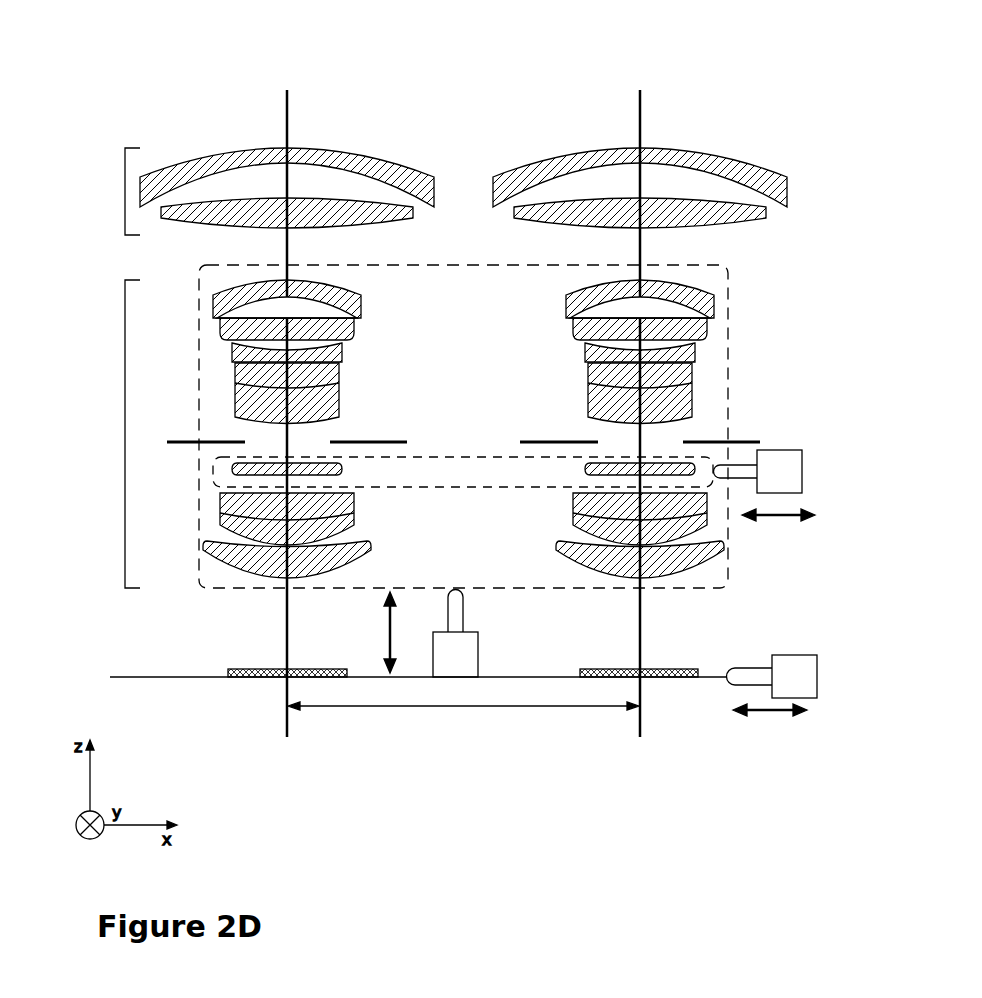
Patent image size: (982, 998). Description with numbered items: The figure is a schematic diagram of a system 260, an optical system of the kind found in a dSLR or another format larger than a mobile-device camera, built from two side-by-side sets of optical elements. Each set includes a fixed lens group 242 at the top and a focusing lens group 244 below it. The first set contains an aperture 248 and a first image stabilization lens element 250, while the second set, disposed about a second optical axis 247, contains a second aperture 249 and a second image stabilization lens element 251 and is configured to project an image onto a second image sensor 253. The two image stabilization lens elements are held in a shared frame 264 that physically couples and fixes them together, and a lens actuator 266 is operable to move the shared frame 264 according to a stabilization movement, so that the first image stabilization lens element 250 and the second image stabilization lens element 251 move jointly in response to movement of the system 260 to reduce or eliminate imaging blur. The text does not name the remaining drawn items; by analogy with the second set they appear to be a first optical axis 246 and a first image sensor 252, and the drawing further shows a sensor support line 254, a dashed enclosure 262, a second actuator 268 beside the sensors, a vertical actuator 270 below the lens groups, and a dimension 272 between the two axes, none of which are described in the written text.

The system 260 is at (426, 46).
The fixed lens group 242 is at (125, 192).
The focusing lens group 244 is at (125, 445).
The first optical axis 246 is at (288, 118).
The second optical axis 247 is at (641, 118).
The aperture 248 is at (185, 441).
The second aperture 249 is at (560, 441).
The first image stabilization lens element 250 is at (236, 467).
The second image stabilization lens element 251 is at (678, 462).
The first image sensor 252 is at (245, 668).
The second image sensor 253 is at (590, 668).
The sensor substrate 254 is at (122, 676).
The lens housing 262 is at (462, 265).
The shared frame 264 is at (468, 456).
The lens actuator 266 is at (800, 450).
The sensor lateral actuator 268 is at (808, 654).
The vertical actuator 270 is at (464, 626).
The inter-axis distance 272 is at (427, 708).